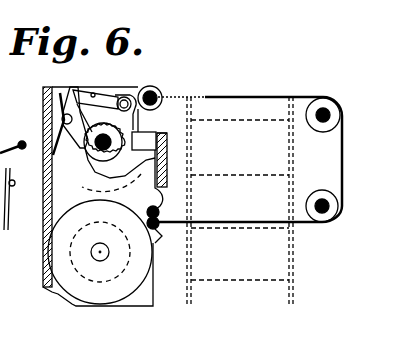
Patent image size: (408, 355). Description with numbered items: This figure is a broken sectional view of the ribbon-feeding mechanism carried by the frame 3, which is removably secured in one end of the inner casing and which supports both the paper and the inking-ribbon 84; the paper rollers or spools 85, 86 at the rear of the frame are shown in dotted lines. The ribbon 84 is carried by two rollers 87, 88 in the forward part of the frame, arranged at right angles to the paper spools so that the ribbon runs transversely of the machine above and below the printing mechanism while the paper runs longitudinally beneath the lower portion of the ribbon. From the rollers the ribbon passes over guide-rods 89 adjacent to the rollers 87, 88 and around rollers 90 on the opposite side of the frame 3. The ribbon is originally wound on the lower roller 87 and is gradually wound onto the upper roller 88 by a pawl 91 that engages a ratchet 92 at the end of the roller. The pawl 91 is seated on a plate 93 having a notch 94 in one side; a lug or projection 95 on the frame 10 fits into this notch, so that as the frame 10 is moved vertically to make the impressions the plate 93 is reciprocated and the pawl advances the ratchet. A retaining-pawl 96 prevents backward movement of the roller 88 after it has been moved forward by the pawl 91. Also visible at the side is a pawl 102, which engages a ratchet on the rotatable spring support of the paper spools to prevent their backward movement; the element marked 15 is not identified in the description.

The frame 3 is at (42, 258).
The frame 10 is at (168, 160).
The lever 15 is at (20, 160).
The inking-ribbon 84 is at (264, 97).
The paper roller 85 is at (230, 120).
The paper roller 86 is at (222, 283).
The lower ribbon roller 87 is at (100, 306).
The upper ribbon roller 88 is at (128, 184).
The guide-rods 89 is at (158, 93).
The rollers 90 is at (321, 133).
The pawl 91 is at (103, 103).
The ratchet 92 is at (88, 153).
The plate 93 is at (118, 98).
The notch 94 is at (148, 128).
The lug 95 is at (168, 134).
The retaining-pawl 96 is at (70, 92).
The pawl 102 is at (9, 212).